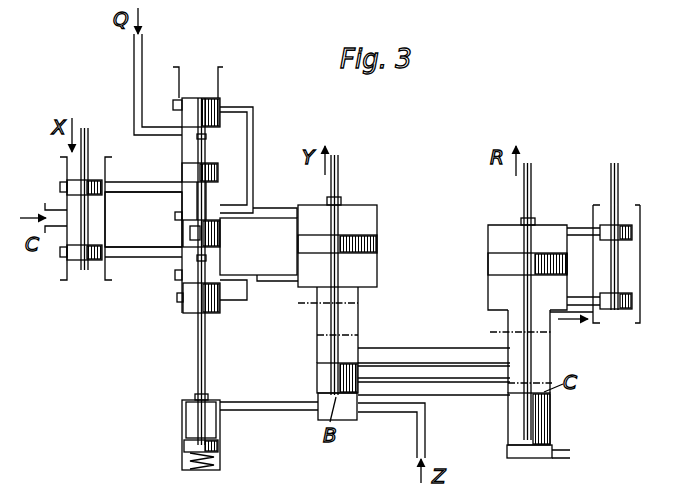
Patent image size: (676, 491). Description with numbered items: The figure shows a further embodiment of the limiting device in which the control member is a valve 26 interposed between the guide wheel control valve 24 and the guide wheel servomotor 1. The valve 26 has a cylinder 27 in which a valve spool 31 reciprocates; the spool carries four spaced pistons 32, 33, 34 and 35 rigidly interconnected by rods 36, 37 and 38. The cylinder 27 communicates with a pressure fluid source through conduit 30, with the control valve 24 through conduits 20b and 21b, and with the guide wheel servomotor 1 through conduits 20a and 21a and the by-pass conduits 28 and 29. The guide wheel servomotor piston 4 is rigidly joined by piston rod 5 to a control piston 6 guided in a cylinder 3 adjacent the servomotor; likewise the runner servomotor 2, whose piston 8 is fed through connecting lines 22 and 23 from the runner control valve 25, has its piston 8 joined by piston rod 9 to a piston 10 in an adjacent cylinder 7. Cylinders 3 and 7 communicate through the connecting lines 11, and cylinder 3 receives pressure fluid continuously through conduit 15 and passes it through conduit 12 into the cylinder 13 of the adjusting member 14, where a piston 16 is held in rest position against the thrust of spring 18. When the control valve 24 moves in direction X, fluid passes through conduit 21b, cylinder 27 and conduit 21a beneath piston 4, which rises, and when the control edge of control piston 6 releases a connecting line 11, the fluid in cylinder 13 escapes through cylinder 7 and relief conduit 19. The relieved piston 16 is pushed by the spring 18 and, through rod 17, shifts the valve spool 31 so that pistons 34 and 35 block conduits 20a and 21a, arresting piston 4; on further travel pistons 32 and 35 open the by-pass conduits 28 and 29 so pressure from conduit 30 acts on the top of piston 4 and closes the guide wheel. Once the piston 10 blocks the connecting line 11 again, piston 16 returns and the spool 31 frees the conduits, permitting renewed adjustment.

The guide wheel servomotor 1 is at (377, 212).
The runner servomotor 2 is at (500, 242).
The cylinder 3 is at (317, 350).
The guide wheel servomotor piston 4 is at (345, 246).
The piston rod 5 is at (340, 281).
The control piston 6 is at (330, 380).
The cylinder 7 is at (520, 451).
The runner servomotor piston 8 is at (512, 268).
The piston rod 9 is at (535, 368).
The piston 10 is at (525, 408).
The connecting lines 11 is at (434, 360).
The conduit 12 is at (280, 408).
The cylinder 13 is at (183, 434).
The adjusting member 14 is at (190, 413).
The conduit 15 is at (410, 405).
The piston 16 is at (218, 445).
The piston rod 17 is at (201, 356).
The spring 18 is at (213, 462).
The relief conduit 19 is at (557, 318).
The conduit 20a is at (258, 246).
The conduit 20b is at (147, 190).
The conduit 21a is at (257, 283).
The conduit 21b is at (158, 250).
The connecting line 22 is at (590, 230).
The connecting line 23 is at (590, 305).
The guide wheel control valve 24 is at (76, 191).
The runner control valve 25 is at (625, 245).
The valve 26 is at (210, 195).
The cylinder 27 is at (180, 203).
The by-pass conduit 28 is at (251, 108).
The by-pass conduit 29 is at (228, 298).
The conduit 30 is at (141, 77).
The valve spool 31 is at (193, 233).
The piston 32 is at (205, 98).
The piston 33 is at (193, 173).
The piston 34 is at (197, 233).
The piston 35 is at (195, 305).
The rod 36 is at (207, 137).
The rod 37 is at (200, 208).
The rod 38 is at (203, 259).